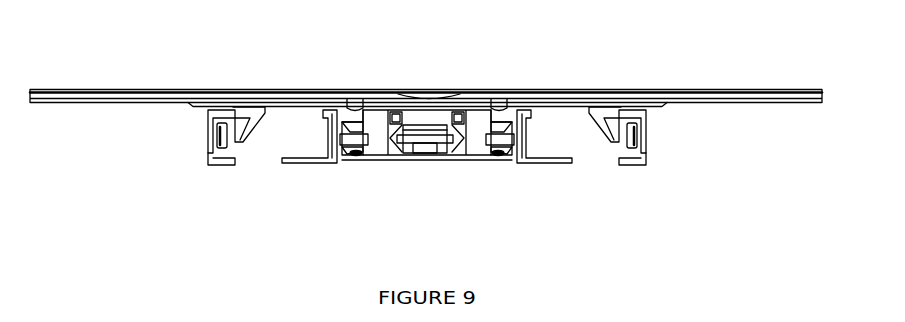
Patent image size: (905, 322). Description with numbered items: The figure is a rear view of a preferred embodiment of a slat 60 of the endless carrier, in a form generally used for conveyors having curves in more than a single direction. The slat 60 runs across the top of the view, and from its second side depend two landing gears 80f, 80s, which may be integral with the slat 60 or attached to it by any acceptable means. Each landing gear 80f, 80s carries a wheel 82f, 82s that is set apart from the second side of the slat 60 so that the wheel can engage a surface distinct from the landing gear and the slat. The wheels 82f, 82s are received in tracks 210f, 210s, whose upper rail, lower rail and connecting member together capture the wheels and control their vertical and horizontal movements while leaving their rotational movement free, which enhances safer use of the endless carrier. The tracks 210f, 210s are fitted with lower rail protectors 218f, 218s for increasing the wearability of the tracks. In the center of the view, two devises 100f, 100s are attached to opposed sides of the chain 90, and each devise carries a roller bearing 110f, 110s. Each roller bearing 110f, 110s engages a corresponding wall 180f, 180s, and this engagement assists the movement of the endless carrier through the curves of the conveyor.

The slat 60 is at (824, 88).
The wheel 82f is at (223, 127).
The wheel 82s is at (630, 127).
The track 210f is at (207, 148).
The track 210s is at (647, 150).
The lower rail protector 218f is at (225, 166).
The lower rail protector 218s is at (628, 167).
The landing gear 80f is at (242, 145).
The landing gear 80s is at (612, 158).
The wall 180f is at (303, 165).
The wall 180s is at (540, 168).
The roller bearing 110f is at (342, 161).
The roller bearing 110s is at (510, 158).
The devise 100f is at (380, 156).
The devise 100s is at (472, 156).
The chain 90 is at (457, 156).